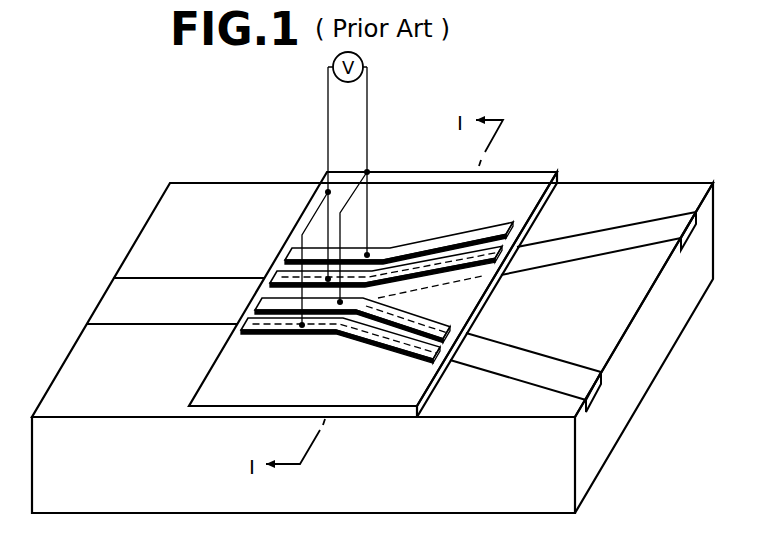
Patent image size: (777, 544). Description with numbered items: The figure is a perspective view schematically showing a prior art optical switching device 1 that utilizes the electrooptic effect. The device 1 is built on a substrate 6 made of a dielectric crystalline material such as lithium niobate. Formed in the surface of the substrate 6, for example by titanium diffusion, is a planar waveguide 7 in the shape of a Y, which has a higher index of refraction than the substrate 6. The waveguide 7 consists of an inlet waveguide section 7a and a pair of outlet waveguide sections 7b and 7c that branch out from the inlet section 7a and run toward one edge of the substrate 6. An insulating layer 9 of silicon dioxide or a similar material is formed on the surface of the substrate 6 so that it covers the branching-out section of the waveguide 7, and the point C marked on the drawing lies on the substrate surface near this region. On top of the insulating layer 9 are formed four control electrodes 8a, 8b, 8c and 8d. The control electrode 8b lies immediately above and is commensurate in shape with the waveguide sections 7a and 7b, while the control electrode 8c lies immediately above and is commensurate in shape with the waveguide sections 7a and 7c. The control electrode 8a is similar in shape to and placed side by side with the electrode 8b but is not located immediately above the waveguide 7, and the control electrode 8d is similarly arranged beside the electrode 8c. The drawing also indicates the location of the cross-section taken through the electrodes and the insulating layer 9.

The optical switching device 1 is at (616, 521).
The substrate 6 is at (625, 193).
The planar waveguide 7 is at (137, 308).
The inlet waveguide section 7a is at (192, 313).
The outlet waveguide section 7b is at (557, 368).
The outlet waveguide section 7c is at (603, 240).
The control electrode 8a is at (368, 338).
The control electrode 8b is at (413, 317).
The control electrode 8c is at (482, 262).
The control electrode 8d is at (440, 246).
The insulating layer 9 is at (422, 181).
The cut line position C is at (170, 181).